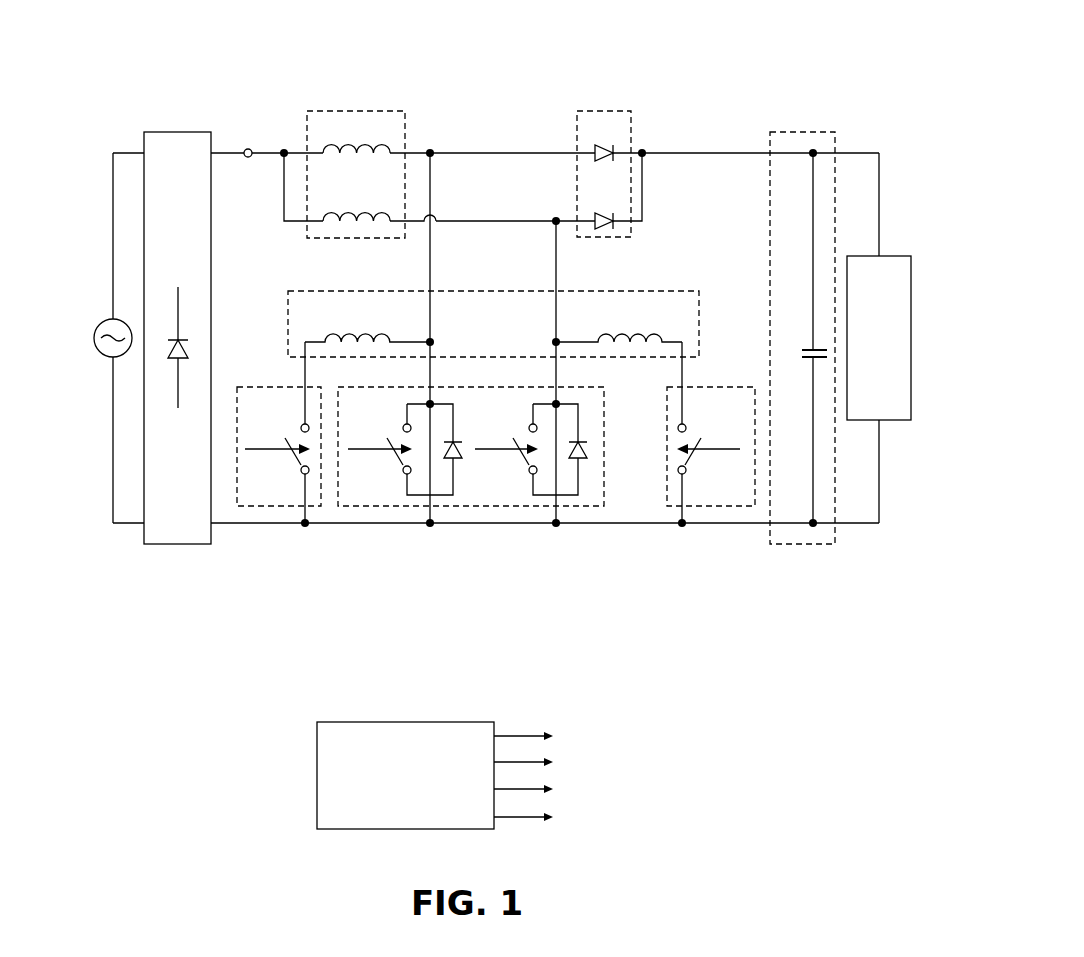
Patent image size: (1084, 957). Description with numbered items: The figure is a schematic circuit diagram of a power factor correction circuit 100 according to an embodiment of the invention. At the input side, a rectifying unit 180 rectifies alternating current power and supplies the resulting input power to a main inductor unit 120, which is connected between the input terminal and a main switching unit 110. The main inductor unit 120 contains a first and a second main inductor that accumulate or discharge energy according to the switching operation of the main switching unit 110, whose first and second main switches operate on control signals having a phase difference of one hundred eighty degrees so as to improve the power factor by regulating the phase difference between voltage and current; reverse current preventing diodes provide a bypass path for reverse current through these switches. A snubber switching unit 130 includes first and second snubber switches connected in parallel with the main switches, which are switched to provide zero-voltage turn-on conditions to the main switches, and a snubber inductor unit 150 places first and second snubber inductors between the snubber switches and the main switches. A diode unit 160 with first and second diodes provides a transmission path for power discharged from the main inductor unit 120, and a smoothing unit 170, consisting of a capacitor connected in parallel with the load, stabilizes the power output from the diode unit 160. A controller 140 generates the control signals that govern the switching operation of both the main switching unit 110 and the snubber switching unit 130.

The power factor correction circuit 100 is at (504, 30).
The rectifying unit 180 is at (177, 132).
The main inductor unit 120 is at (358, 111).
The diode unit 160 is at (603, 111).
The smoothing unit 170 is at (800, 132).
The snubber inductor unit 150 is at (683, 291).
The snubber switching unit 130 is at (280, 506).
The main switching unit 110 is at (472, 506).
The controller 140 is at (405, 722).